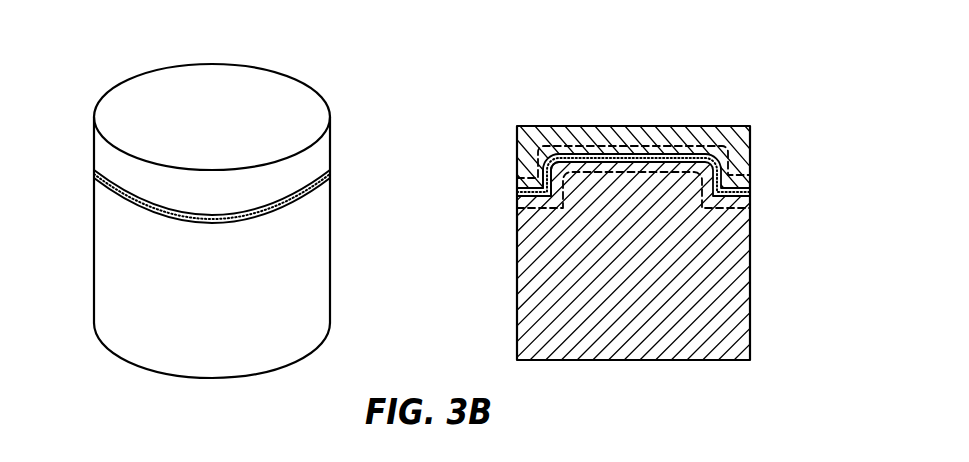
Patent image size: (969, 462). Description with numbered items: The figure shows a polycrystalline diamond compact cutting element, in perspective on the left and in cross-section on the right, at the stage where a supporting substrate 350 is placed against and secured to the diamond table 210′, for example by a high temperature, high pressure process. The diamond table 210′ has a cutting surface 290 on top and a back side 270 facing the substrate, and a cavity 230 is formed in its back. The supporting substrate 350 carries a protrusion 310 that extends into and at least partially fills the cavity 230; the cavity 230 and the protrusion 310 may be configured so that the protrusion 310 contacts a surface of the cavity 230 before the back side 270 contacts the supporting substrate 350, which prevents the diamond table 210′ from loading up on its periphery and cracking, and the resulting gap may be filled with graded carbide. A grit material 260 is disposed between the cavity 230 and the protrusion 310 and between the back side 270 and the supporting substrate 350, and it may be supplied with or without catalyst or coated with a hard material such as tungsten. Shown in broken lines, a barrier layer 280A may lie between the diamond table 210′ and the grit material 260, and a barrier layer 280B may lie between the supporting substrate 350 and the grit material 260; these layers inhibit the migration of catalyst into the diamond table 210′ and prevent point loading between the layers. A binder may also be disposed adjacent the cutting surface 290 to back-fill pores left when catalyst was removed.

The diamond table 210′ is at (330, 100).
The cutting surface 290 is at (152, 93).
The grit material 260 is at (317, 190).
The supporting substrate 350 is at (331, 263).
The cavity 230 is at (572, 157).
The back side 270 is at (535, 183).
The protrusion 310 is at (593, 163).
The barrier layer 280A is at (684, 142).
The barrier layer 280B is at (733, 221).